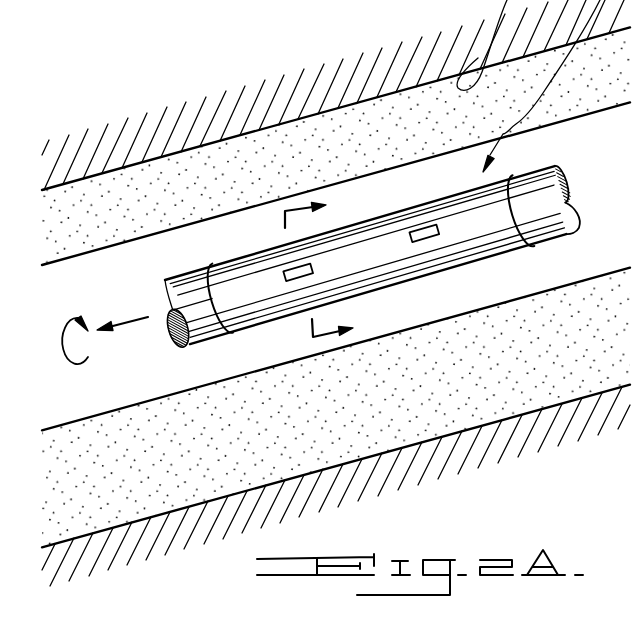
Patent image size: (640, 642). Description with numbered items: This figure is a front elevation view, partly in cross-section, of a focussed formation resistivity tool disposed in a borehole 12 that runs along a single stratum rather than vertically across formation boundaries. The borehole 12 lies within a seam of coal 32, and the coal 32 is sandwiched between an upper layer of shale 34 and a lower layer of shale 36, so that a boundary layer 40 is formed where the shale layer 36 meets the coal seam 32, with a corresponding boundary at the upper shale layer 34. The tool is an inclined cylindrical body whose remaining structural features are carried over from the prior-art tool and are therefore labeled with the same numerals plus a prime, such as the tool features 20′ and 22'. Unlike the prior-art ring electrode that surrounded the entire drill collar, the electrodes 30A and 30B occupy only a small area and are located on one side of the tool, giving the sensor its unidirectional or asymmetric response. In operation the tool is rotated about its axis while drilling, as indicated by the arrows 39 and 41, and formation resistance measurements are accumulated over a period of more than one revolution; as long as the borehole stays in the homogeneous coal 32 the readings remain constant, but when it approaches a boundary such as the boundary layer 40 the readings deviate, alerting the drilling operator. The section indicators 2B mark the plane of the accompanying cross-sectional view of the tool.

The borehole 12 is at (121, 243).
The logging tool 20′ is at (492, 205).
The tool housing 22' is at (594, 174).
The electrode 30A is at (293, 283).
The electrode 30B is at (440, 240).
The coal seam 32 is at (348, 153).
The shale layer 34 is at (353, 88).
The shale layer 36 is at (349, 497).
The arrow 39 is at (127, 321).
The boundary layer 40 is at (397, 447).
The arrow 41 is at (66, 315).
The section line 2B is at (335, 266).